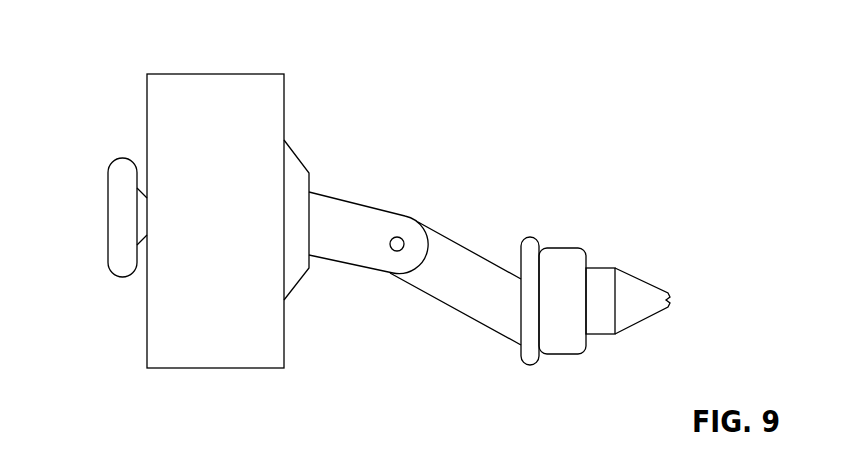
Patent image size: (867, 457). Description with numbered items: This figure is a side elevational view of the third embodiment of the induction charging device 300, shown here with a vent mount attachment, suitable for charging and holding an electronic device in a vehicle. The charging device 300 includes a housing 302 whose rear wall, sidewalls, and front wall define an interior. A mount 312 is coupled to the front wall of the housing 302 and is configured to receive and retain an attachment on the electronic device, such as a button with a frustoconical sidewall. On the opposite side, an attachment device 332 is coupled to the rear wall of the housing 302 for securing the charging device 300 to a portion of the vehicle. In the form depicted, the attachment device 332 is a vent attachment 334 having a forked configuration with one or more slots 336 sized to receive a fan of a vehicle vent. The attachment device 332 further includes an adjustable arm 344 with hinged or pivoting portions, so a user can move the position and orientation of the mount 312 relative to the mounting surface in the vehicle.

The induction charging device 300 is at (196, 42).
The housing 302 is at (238, 73).
The mount 312 is at (108, 178).
The attachment device 332 is at (429, 213).
The vent attachment 334 is at (565, 248).
The slots 336 is at (625, 297).
The adjustable arm 344 is at (358, 264).